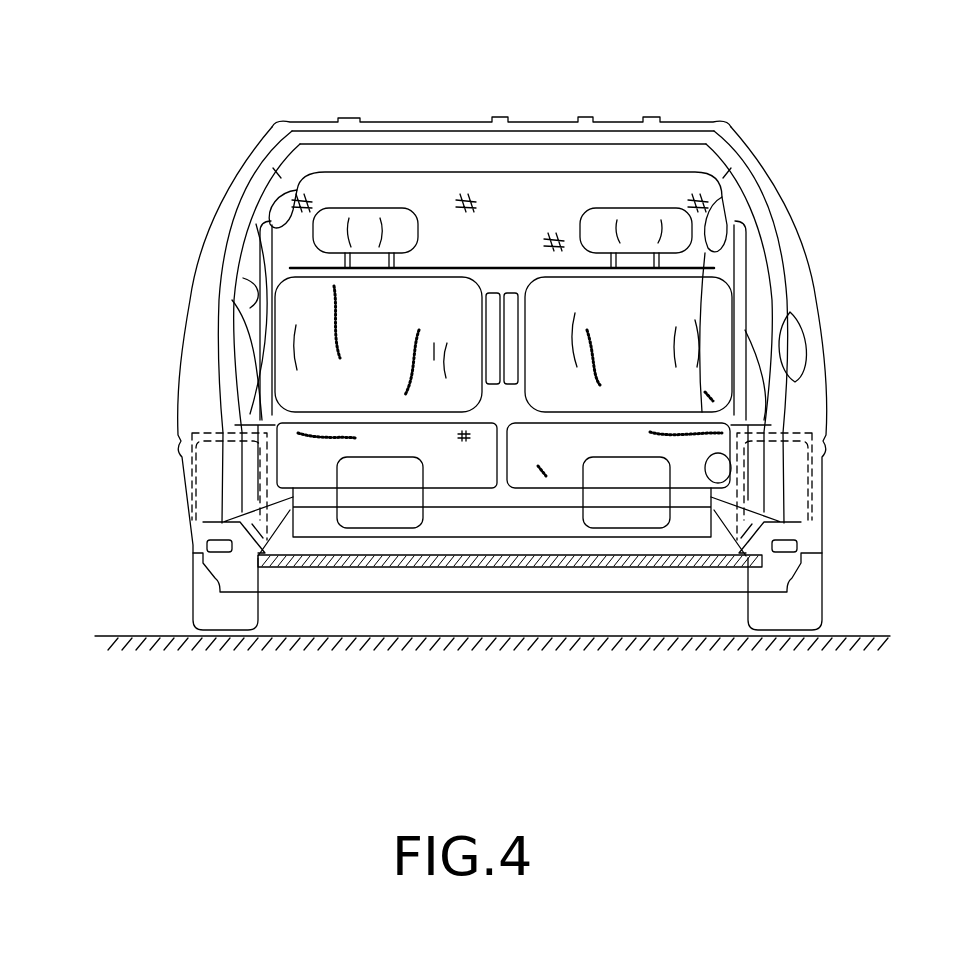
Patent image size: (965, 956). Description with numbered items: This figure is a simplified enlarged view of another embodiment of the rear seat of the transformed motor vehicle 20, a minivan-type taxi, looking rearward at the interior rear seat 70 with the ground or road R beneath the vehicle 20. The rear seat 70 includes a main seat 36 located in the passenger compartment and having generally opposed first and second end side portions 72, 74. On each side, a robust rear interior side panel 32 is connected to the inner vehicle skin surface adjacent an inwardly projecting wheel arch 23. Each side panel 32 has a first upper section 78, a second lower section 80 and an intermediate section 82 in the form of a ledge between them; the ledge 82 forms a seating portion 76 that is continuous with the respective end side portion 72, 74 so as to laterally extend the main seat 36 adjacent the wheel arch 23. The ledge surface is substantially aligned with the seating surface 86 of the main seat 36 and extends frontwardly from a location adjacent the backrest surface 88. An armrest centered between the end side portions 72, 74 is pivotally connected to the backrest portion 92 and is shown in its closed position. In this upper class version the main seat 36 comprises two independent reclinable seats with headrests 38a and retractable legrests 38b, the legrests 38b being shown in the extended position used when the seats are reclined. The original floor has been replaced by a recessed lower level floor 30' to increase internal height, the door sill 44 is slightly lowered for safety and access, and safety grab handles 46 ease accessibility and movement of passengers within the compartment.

The motor vehicle 20 is at (850, 125).
The inwardly projecting wheel arch 23 is at (182, 447).
The lower level floor 30' is at (510, 592).
The first rear interior side panel 32 is at (243, 277).
The main seat 36 is at (447, 474).
The headrest 38a is at (368, 215).
The legrest 38b is at (510, 303).
The door sill 44 is at (223, 520).
The safety grab handle 46 is at (748, 305).
The interior rear seat 70 is at (797, 407).
The first end side portion 72 is at (752, 219).
The second end side portion 74 is at (302, 415).
The seating portion 76 is at (255, 412).
The first upper section 78 is at (745, 302).
The second lower section 80 is at (735, 478).
The intermediate section 82 is at (253, 410).
The seating surface 86 is at (688, 423).
The backrest surface 88 is at (362, 326).
The backrest portion 92 is at (272, 212).
The ground or road R is at (848, 633).